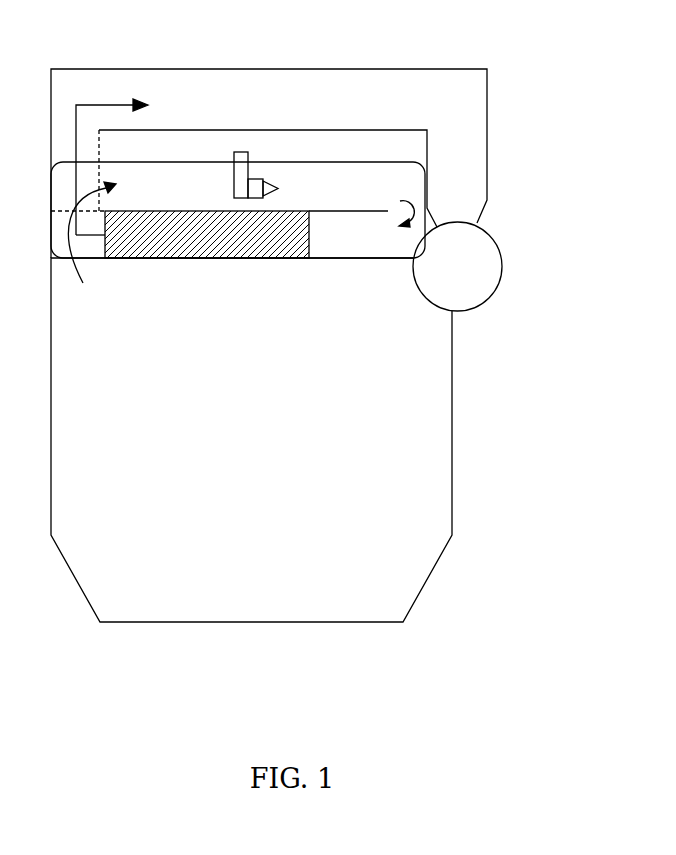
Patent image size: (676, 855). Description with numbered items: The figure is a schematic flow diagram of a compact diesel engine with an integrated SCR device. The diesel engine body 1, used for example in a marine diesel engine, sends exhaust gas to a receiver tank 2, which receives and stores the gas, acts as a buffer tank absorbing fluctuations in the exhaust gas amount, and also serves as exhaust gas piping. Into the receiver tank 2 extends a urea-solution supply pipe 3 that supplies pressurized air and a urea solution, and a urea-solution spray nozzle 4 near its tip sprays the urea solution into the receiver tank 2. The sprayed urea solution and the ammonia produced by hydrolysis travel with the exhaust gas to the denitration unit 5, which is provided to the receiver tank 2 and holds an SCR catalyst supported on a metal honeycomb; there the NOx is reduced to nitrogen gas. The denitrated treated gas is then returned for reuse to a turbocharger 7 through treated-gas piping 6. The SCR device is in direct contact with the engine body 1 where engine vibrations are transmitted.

The diesel engine body 1 is at (211, 592).
The receiver tank 2 is at (382, 162).
The urea-solution supply pipe 3 is at (232, 167).
The urea-solution spray nozzle 4 is at (265, 178).
The denitration unit 5 is at (195, 252).
The treated-gas piping 6 is at (283, 85).
The turbocharger 7 is at (472, 292).